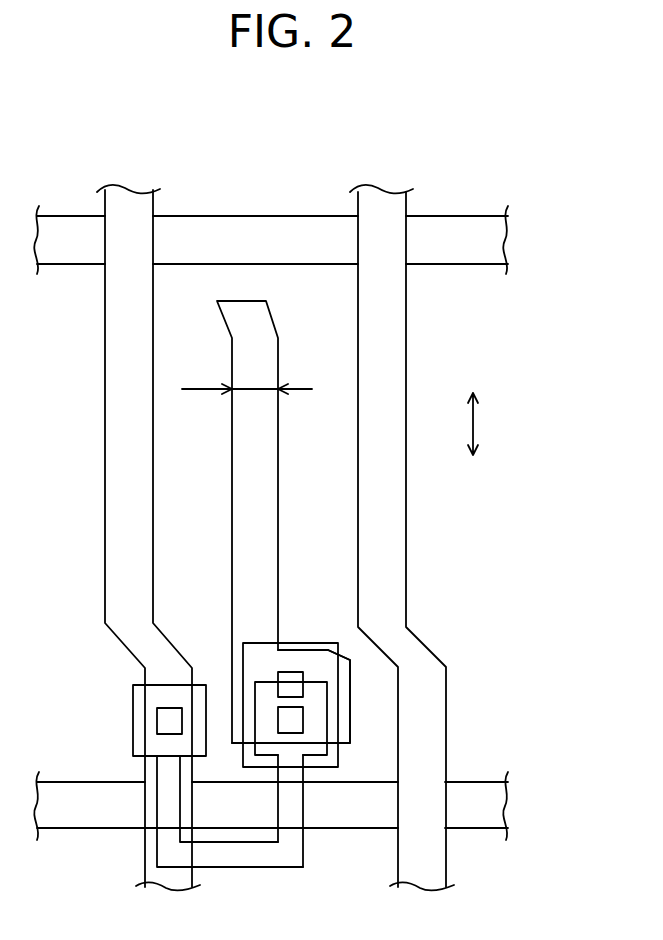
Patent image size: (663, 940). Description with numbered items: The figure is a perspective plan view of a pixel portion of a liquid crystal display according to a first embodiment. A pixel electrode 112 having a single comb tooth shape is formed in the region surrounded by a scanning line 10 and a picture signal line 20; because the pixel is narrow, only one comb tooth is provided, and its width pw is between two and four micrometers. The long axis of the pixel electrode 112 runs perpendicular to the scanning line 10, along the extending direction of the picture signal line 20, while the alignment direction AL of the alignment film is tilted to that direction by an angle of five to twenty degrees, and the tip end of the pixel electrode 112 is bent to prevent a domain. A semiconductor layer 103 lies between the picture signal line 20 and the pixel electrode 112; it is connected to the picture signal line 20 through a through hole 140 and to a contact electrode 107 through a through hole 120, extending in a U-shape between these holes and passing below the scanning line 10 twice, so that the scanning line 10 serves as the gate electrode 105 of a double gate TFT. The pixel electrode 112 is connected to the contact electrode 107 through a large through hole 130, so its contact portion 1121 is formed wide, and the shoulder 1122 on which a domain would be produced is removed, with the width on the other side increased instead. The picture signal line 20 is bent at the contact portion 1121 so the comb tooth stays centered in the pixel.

The scanning line 10 is at (507, 240).
The picture signal line 20 is at (385, 196).
The pixel electrode 112 is at (260, 500).
The contact portion 1121 is at (295, 660).
The shoulder 1122 is at (315, 648).
The contact electrode 107 is at (340, 757).
The through hole 120 is at (297, 720).
The through hole 130 is at (297, 680).
The gate electrode 105 is at (304, 803).
The semiconductor layer 103 is at (240, 857).
The through hole 140 is at (160, 720).
The width of the pixel electrode pw is at (244, 375).
The alignment direction AL is at (475, 420).